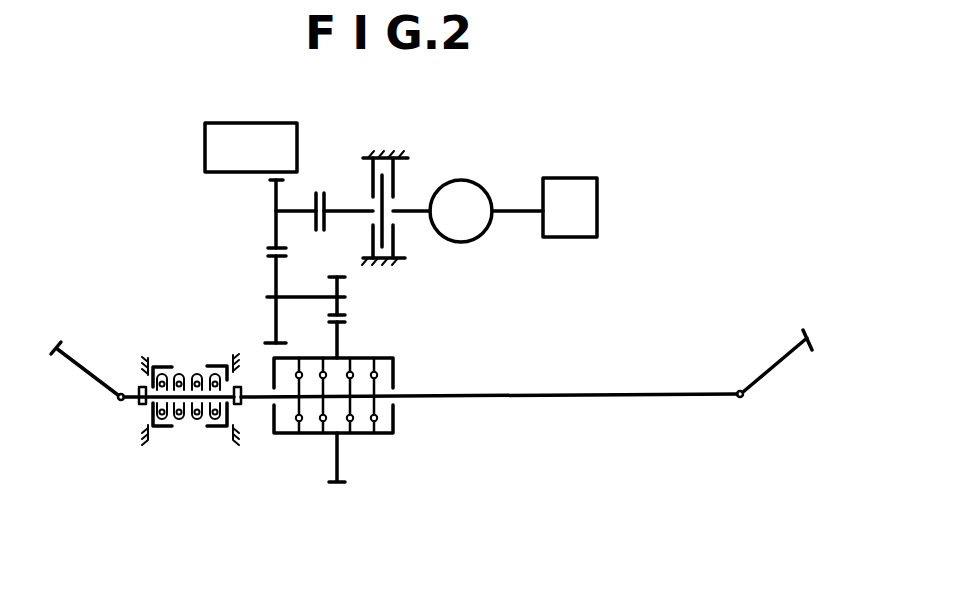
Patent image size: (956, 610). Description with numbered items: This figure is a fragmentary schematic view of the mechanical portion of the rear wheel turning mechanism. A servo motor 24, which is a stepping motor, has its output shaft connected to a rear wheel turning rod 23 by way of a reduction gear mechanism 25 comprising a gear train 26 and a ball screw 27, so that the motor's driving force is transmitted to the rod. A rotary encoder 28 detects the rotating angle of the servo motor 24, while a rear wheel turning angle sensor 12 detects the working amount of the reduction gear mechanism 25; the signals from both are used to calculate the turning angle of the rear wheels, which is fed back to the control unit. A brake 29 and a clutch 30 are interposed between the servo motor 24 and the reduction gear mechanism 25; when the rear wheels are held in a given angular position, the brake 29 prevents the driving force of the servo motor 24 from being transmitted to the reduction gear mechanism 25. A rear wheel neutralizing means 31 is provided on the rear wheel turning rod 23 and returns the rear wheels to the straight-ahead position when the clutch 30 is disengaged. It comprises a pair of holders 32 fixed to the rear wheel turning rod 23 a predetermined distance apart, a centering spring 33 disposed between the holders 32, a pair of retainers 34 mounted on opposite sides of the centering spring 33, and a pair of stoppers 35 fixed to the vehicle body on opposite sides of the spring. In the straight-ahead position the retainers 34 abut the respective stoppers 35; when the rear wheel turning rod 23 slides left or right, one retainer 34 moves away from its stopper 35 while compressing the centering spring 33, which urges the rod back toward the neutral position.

The rear wheel turning angle sensor 12 is at (206, 140).
The rear wheel turning rod 23 is at (575, 397).
The servo motor 24 is at (482, 240).
The reduction gear mechanism 25 is at (371, 345).
The gear train 26 is at (268, 222).
The ball screw 27 is at (356, 439).
The rotary encoder 28 is at (585, 178).
The brake 29 is at (402, 191).
The clutch 30 is at (325, 190).
The rear wheel neutralizing means 31 is at (187, 434).
The holders 32 is at (140, 403).
The centering spring 33 is at (195, 377).
The retainers 34 is at (168, 365).
The stoppers 35 is at (145, 442).